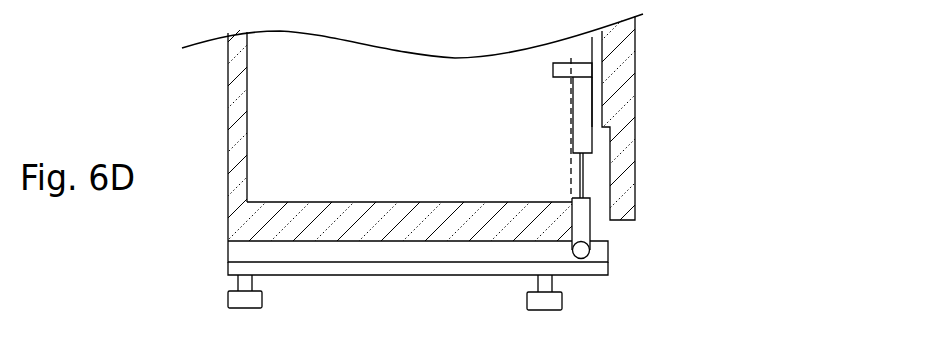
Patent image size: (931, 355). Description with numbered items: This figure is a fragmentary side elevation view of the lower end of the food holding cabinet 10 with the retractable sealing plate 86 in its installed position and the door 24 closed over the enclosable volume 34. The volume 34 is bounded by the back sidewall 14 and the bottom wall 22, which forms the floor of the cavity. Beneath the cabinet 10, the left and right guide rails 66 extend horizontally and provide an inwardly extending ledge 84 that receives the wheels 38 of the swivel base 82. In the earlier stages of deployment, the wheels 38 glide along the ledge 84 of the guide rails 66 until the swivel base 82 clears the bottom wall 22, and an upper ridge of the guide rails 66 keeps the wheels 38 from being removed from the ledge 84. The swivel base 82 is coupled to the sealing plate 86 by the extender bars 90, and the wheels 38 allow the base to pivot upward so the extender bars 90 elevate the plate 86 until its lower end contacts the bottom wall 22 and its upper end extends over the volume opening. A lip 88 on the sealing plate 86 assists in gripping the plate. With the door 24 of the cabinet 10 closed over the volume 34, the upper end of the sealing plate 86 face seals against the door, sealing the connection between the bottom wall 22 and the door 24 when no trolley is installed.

The food holding cabinet 10 is at (205, 176).
The back sidewall 14 is at (242, 151).
The bottom wall 22 is at (321, 208).
The door 24 is at (612, 117).
The enclosable volume 34 is at (397, 83).
The wheels 38 is at (590, 252).
The guide rails 66 is at (318, 266).
The swivel base 82 is at (583, 230).
The ledge 84 is at (250, 260).
The retractable sealing plate 86 is at (582, 97).
The lip 88 is at (563, 72).
The extender bars 90 is at (592, 168).